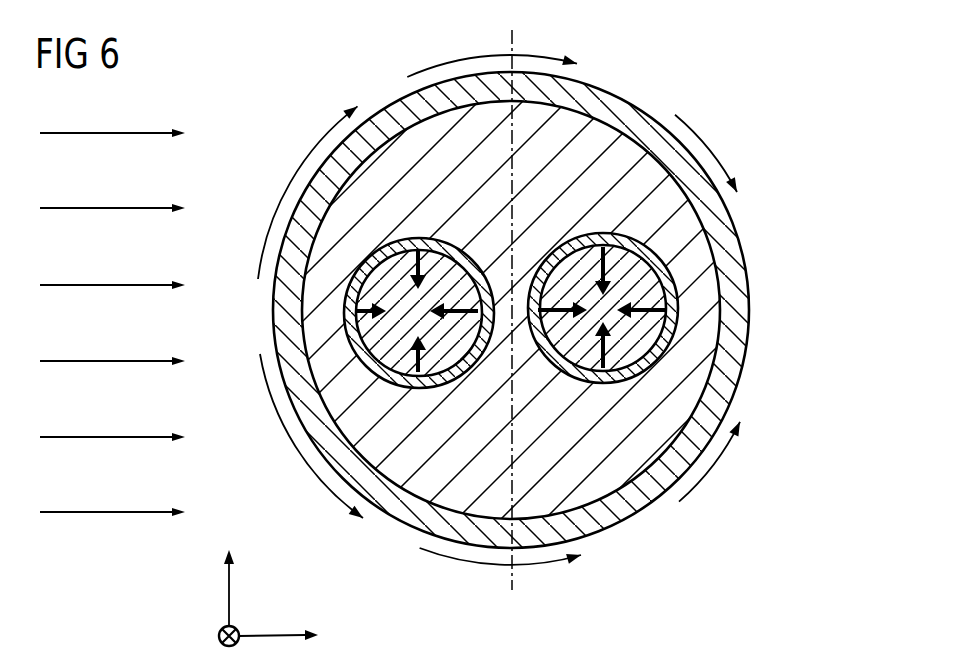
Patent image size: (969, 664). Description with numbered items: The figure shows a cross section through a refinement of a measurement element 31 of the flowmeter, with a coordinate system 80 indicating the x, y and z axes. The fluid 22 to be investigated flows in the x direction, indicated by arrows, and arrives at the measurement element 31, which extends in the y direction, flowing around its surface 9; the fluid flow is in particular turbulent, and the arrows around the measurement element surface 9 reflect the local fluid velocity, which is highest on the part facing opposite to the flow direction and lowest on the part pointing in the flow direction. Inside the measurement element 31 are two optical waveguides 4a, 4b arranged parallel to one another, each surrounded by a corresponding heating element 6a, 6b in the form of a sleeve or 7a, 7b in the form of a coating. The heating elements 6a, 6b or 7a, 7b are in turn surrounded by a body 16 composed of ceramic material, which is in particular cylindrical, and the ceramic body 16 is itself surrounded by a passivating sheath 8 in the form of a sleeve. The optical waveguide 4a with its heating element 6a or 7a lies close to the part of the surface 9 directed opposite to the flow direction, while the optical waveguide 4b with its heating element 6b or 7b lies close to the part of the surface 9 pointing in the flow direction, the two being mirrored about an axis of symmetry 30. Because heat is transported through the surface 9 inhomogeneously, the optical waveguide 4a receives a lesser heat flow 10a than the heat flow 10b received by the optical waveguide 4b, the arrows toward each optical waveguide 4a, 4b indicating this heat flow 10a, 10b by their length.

The optical waveguide 4a is at (360, 352).
The optical waveguide 4b is at (648, 320).
The heating element (sleeve) 6a is at (339, 313).
The heating element (sleeve) 6b is at (674, 326).
The heating element (coating) 7a is at (355, 325).
The heating element (coating) 7b is at (662, 335).
The passivating sheath 8 is at (645, 497).
The measurement element surface 9 is at (386, 97).
The heat flow 10a is at (375, 300).
The heat flow 10b is at (552, 338).
The body 16 is at (435, 470).
The fluid 22 is at (441, 62).
The axis of symmetry 30 is at (517, 568).
The measurement element 31 is at (779, 118).
The coordinate system 80 is at (262, 600).